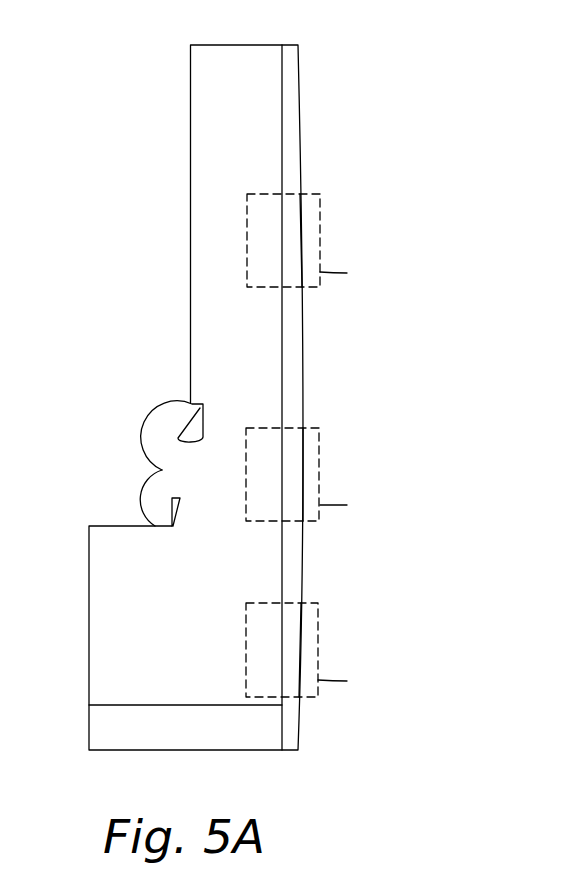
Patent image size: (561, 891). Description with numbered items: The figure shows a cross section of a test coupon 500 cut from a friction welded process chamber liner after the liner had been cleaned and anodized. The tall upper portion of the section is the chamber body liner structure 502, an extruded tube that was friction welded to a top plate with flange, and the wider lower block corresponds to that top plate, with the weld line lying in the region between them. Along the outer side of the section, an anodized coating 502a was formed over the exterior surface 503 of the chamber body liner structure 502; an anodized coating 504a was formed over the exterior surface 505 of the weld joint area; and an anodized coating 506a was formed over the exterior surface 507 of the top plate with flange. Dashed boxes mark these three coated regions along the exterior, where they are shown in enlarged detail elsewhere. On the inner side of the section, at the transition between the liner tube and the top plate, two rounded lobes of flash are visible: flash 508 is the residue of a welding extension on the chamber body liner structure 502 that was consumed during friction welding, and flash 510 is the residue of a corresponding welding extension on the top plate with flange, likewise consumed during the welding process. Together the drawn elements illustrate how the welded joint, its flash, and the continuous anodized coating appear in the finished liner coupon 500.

The test coupon 500 is at (138, 215).
The chamber body liner structure 502 is at (190, 113).
The anodized coating 502a is at (292, 222).
The exterior surface 503 is at (282, 242).
The anodized coating 504a is at (292, 455).
The exterior surface 505 is at (282, 474).
The anodized coating 506a is at (290, 633).
The exterior surface 507 is at (281, 653).
The flash 508 is at (140, 436).
The flash 510 is at (141, 499).